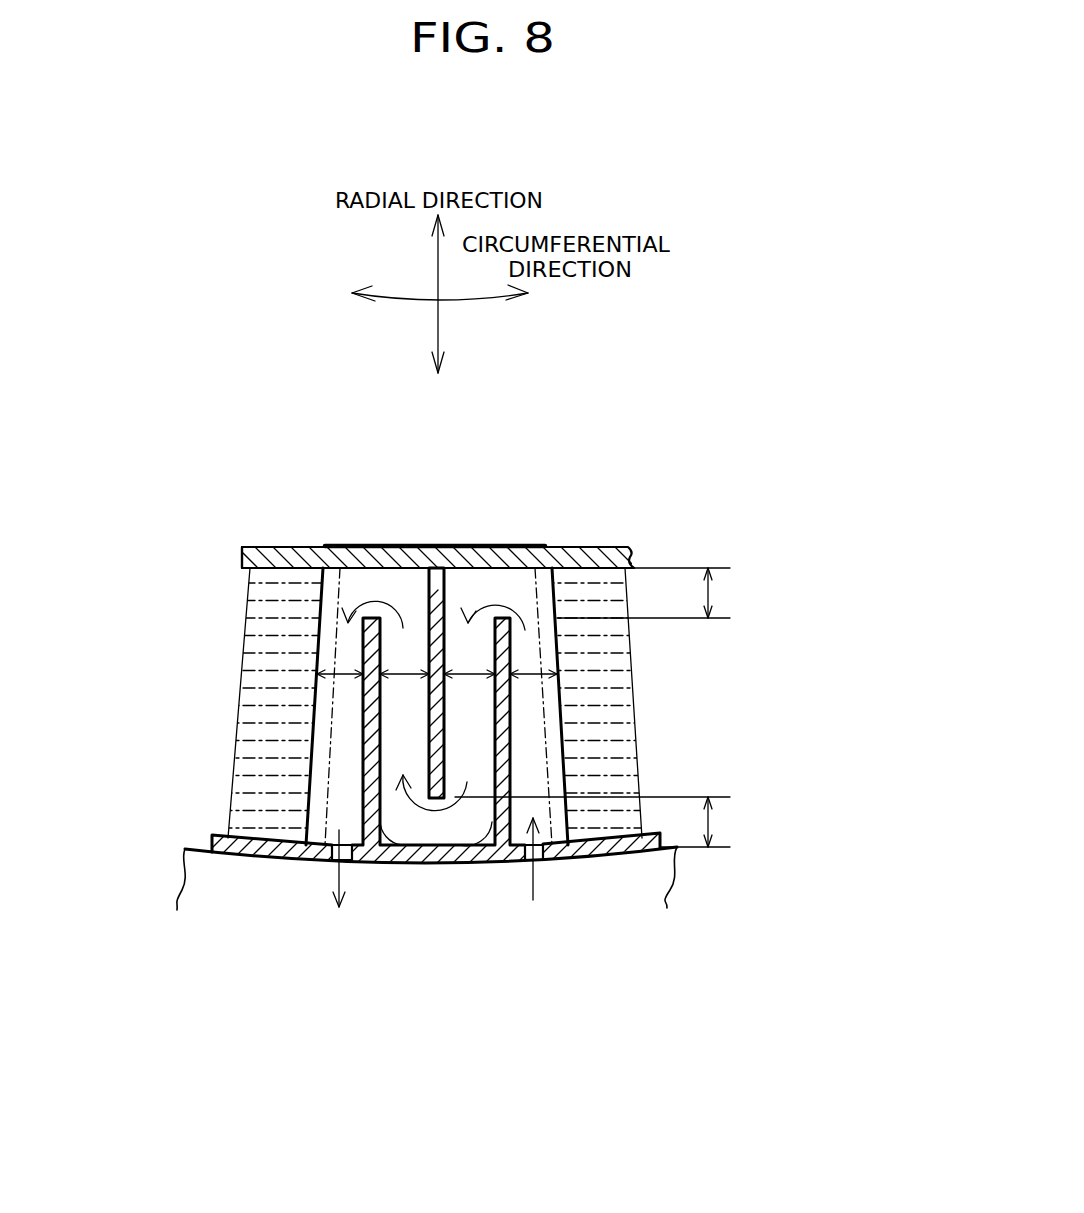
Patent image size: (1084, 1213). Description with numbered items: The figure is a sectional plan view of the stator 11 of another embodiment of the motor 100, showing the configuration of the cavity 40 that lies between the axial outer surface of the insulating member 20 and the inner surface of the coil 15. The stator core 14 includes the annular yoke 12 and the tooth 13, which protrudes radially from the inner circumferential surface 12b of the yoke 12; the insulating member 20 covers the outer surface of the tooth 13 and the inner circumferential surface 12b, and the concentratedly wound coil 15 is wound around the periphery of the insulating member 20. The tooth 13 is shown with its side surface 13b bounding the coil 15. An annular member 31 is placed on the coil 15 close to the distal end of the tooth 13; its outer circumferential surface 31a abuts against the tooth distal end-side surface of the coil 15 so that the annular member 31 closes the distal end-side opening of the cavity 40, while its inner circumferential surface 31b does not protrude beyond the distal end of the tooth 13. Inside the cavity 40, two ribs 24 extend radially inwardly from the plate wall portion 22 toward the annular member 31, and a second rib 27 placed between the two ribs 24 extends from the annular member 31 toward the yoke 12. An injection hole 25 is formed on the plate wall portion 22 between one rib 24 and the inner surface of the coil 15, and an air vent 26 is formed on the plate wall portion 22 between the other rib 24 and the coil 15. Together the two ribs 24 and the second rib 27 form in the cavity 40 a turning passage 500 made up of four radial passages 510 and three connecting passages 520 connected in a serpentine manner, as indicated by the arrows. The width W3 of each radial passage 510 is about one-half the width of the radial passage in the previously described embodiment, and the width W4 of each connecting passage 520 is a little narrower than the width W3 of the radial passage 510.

The motor 100 is at (825, 170).
The stator 11 is at (703, 240).
The yoke 12 is at (668, 884).
The inner circumferential surface 12b is at (208, 834).
The tooth 13 is at (467, 547).
The tooth side surface 13b is at (335, 633).
The stator core 14 is at (645, 907).
The coil 15 is at (638, 742).
The insulating member 20 is at (213, 862).
The plate wall portion 22 is at (260, 862).
The rib 24 is at (402, 847).
The injection hole 25 is at (568, 860).
The air vent 26 is at (288, 862).
The second rib 27 is at (432, 585).
The annular member 31 is at (610, 547).
The outer circumferential surface 31a is at (242, 567).
The inner circumferential surface 31b is at (280, 547).
The cavity 40 is at (505, 580).
The turning passage 500 is at (532, 702).
The radial passage 510 is at (343, 753).
The connecting passage 520 is at (378, 598).
The width of the radial passage W3 is at (437, 660).
The width of the connecting passage W4 is at (610, 707).